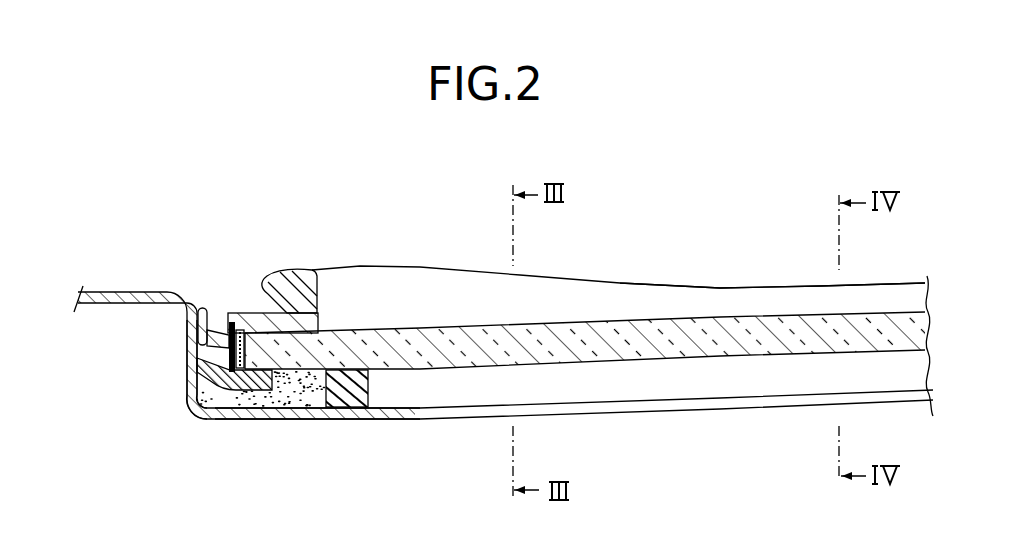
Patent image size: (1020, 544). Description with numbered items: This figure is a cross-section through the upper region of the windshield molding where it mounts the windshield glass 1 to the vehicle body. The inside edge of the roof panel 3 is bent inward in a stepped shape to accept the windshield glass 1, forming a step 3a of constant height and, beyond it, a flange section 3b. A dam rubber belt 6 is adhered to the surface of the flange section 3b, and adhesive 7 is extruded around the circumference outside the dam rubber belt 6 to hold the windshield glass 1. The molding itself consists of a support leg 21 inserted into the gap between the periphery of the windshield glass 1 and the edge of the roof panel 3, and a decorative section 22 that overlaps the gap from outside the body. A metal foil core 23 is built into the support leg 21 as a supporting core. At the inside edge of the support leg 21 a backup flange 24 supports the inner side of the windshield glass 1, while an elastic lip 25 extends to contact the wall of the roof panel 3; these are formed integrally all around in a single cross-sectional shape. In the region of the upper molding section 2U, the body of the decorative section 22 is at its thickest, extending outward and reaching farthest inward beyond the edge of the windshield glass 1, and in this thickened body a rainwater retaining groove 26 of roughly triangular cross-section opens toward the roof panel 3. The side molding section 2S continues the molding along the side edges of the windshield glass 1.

The windshield glass 1 is at (622, 340).
The upper molding section 2U is at (334, 260).
The side molding section 2S is at (803, 284).
The decorative section 22 is at (305, 268).
The roof panel 3 is at (128, 292).
The step 3a is at (185, 328).
The flange section 3b is at (292, 424).
The dam rubber belt 6 is at (368, 388).
The adhesive 7 is at (214, 416).
The support leg 21 is at (222, 397).
The metal foil core 23 is at (230, 345).
The backup flange 24 is at (262, 412).
The elastic lip 25 is at (231, 331).
The rainwater retaining groove 26 is at (263, 283).